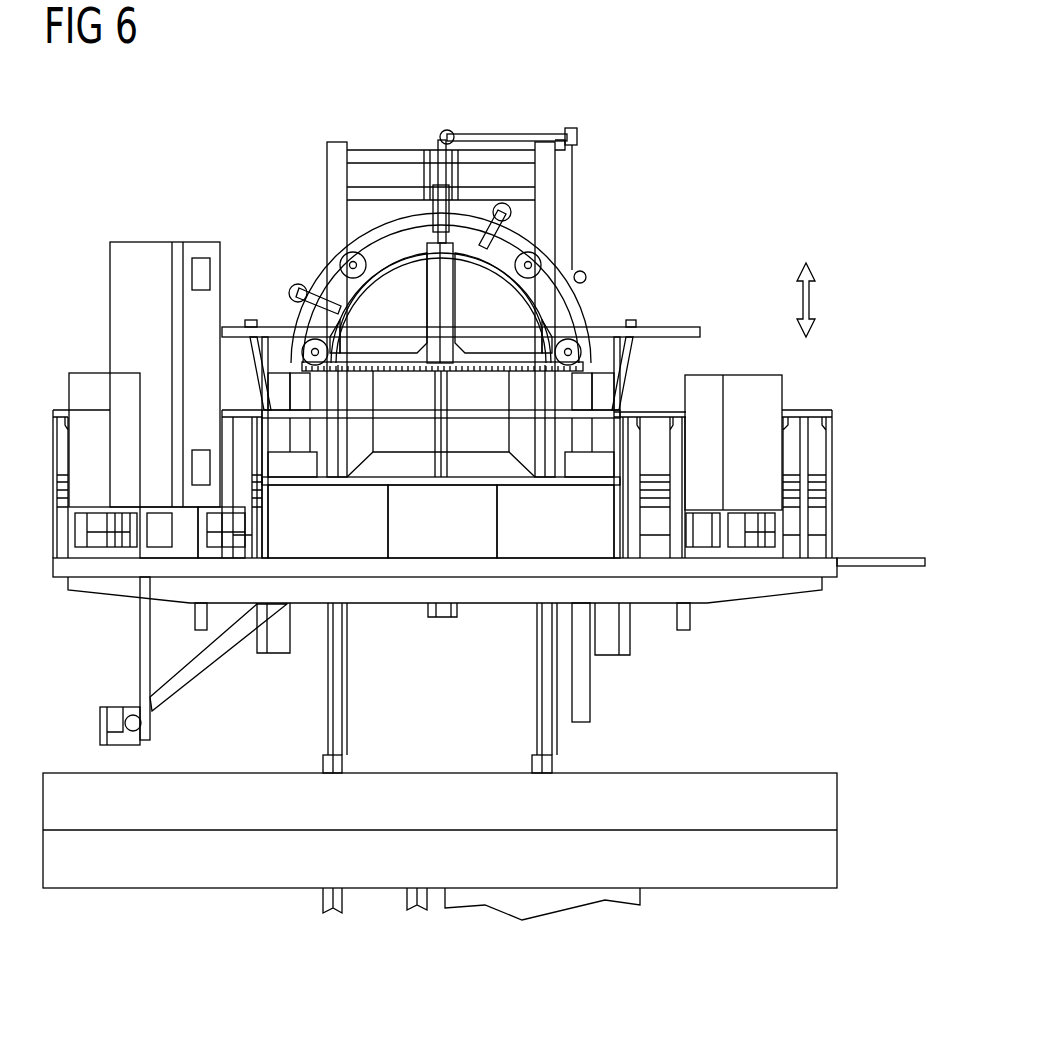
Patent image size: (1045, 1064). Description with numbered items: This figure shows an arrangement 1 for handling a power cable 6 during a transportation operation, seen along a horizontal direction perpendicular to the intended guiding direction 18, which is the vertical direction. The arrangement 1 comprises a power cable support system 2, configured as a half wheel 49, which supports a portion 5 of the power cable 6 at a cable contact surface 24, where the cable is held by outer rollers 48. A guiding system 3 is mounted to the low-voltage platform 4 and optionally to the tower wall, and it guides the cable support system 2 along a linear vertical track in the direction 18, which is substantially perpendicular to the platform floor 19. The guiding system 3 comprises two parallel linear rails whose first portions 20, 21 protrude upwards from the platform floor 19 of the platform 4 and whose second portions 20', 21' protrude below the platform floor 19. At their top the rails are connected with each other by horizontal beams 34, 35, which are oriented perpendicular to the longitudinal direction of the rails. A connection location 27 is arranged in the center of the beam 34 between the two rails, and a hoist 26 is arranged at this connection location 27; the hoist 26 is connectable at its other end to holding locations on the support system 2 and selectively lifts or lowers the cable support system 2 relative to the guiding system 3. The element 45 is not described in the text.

The arrangement 1 is at (764, 206).
The power cable support system 2 is at (606, 278).
The guiding system 3 is at (623, 110).
The low-voltage platform 4 is at (852, 594).
The portion of a power cable 5 is at (585, 298).
The power cable 6 is at (190, 672).
The vertical direction 18 is at (810, 300).
The platform floor 19 is at (757, 590).
The first portion of linear rail 20 is at (303, 309).
The second portion of linear rail 20' is at (304, 688).
The first portion of linear rail 21 is at (590, 302).
The second portion of linear rail 21' is at (584, 688).
The cable contact surface 24 is at (334, 326).
The hoist 26 is at (516, 120).
The connection location 27 is at (445, 130).
The beam 34 is at (360, 152).
The beam 35 is at (400, 193).
The pile guide 45 is at (590, 697).
The outer rollers 48 is at (290, 290).
The half wheel 49 is at (327, 274).